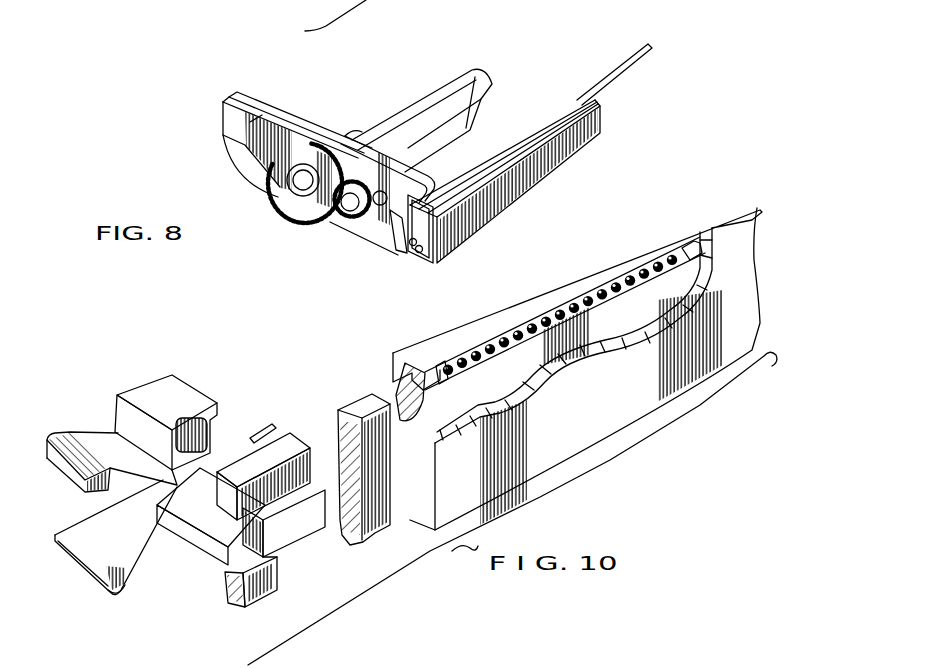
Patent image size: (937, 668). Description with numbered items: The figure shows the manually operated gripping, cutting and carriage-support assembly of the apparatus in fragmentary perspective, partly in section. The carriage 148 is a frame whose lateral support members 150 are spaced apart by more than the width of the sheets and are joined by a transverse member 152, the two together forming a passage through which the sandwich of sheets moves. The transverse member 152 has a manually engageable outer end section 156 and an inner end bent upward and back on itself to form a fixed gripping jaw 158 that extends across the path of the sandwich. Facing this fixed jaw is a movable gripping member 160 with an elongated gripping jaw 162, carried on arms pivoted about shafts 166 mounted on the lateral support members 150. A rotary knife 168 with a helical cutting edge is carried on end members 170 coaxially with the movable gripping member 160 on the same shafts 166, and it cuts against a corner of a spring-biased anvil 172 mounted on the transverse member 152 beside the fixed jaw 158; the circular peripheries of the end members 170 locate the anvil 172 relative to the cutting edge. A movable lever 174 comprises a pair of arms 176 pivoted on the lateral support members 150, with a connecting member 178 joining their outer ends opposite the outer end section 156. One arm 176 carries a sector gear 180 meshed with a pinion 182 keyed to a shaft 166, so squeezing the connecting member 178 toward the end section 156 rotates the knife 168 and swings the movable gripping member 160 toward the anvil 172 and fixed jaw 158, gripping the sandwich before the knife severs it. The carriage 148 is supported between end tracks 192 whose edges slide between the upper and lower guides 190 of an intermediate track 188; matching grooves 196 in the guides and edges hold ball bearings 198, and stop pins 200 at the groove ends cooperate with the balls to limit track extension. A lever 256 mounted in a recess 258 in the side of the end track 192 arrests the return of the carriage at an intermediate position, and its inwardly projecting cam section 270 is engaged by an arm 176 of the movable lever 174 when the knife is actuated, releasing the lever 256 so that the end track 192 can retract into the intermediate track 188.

In FIG. 8, the carriage 148 is at (301, 107).
In FIG. 8, the lateral support member 150 is at (253, 160).
In FIG. 10, the lateral support member 150 is at (215, 453).
In FIG. 8, the transverse member 152 is at (407, 252).
In FIG. 10, the outer end section 156 is at (128, 568).
In FIG. 8, the gripping jaw 158 is at (458, 215).
In FIG. 8, the movable gripping member 160 is at (440, 170).
In FIG. 8, the gripping jaw 162 is at (580, 92).
In FIG. 8, the shaft 166 is at (382, 210).
In FIG. 8, the rotary knife 168 is at (433, 97).
In FIG. 8, the end member 170 is at (382, 142).
In FIG. 8, the anvil 172 is at (443, 252).
In FIG. 10, the movable lever 174 is at (125, 497).
In FIG. 8, the arm 176 is at (250, 122).
In FIG. 10, the connecting member 178 is at (73, 465).
In FIG. 8, the sector gear 180 is at (302, 208).
In FIG. 8, the pinion 182 is at (355, 217).
In FIG. 10, the intermediate track 188 is at (600, 420).
In FIG. 10, the guide 190 is at (412, 352).
In FIG. 10, the end track 192 is at (375, 545).
In FIG. 10, the groove 196 is at (275, 455).
In FIG. 10, the ball bearing 198 is at (535, 303).
In FIG. 10, the stop pin 200 is at (680, 240).
In FIG. 10, the lever 256 is at (300, 518).
In FIG. 10, the recess 258 is at (280, 550).
In FIG. 10, the cam section 270 is at (215, 540).